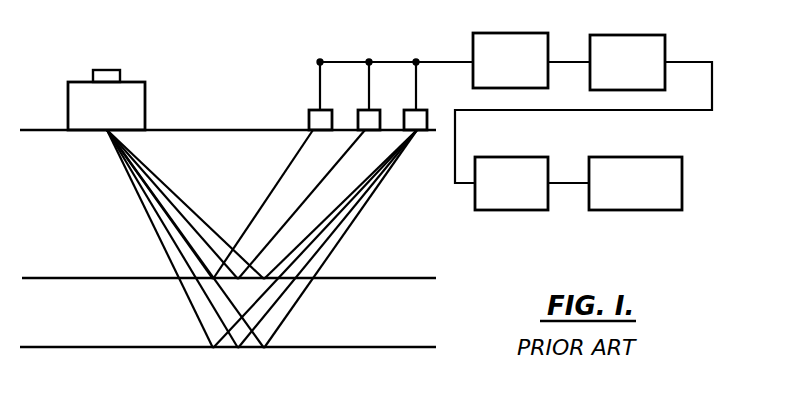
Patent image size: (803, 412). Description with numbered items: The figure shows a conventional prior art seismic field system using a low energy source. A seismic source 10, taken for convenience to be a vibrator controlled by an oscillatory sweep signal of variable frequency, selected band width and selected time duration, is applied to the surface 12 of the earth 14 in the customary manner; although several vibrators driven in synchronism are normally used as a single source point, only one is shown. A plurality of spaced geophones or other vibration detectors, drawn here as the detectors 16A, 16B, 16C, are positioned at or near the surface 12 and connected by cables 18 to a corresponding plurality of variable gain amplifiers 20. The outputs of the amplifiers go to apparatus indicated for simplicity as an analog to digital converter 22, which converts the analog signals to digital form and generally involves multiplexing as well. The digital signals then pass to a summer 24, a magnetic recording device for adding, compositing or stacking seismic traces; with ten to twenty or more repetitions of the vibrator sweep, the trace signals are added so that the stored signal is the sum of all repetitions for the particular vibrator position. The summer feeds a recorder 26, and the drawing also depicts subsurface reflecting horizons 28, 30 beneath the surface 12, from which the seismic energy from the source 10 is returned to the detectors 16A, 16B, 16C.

The seismic source 10 is at (145, 97).
The surface 12 is at (212, 130).
The earth 14 is at (229, 173).
The geophone receiver 16A is at (309, 112).
The geophone receiver 16B is at (358, 112).
The geophone receiver 16C is at (404, 115).
The cables 18 is at (450, 59).
The variable gain amplifiers 20 is at (540, 33).
The analog to digital converter 22 is at (655, 35).
The summer 24 is at (530, 157).
The recorder 26 is at (663, 157).
The first reflecting layer 28 is at (73, 277).
The second reflecting layer 30 is at (72, 346).